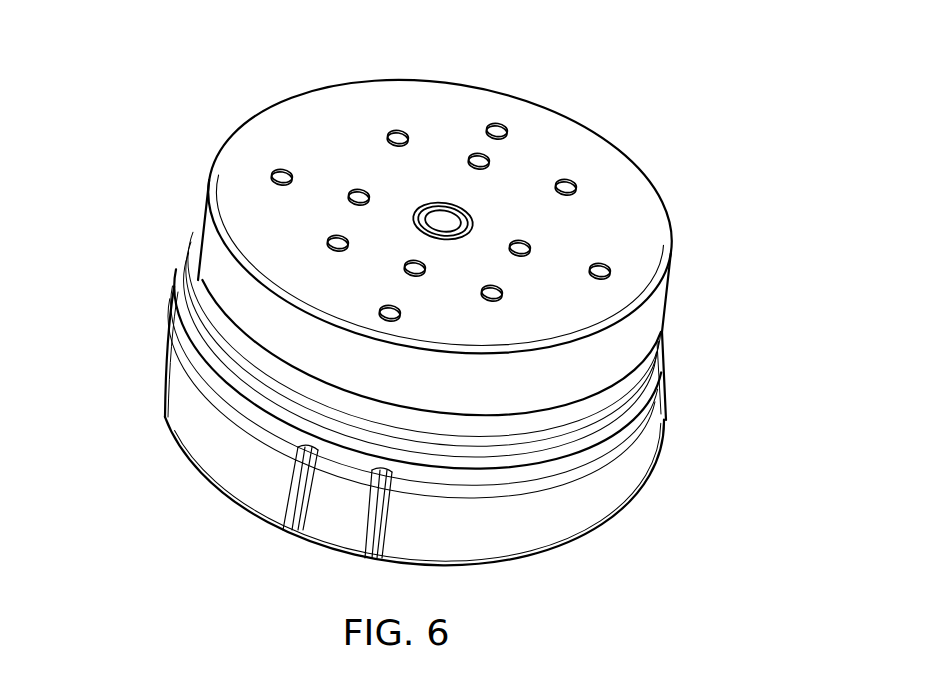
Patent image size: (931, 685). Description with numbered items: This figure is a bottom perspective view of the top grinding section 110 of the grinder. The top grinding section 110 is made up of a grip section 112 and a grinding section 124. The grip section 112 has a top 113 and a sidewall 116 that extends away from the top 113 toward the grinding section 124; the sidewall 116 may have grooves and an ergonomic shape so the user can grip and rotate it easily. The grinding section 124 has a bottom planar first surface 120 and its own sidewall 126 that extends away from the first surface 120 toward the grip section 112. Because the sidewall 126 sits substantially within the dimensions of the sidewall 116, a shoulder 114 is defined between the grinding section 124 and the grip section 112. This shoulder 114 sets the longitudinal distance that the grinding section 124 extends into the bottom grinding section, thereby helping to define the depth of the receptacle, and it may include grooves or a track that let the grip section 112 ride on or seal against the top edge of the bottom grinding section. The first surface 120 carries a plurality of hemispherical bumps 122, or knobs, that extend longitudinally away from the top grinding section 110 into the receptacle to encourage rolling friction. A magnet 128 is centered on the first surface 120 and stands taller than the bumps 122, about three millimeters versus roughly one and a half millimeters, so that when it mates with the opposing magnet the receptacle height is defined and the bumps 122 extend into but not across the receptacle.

The top grinding section 110 is at (687, 204).
The grip section 112 is at (668, 432).
The top 113 is at (163, 422).
The shoulder 114 is at (199, 300).
The sidewall 116 is at (324, 505).
The first surface 120 is at (539, 124).
The bumps 122 is at (574, 171).
The grinding section 124 is at (238, 105).
The sidewall 126 is at (204, 164).
The magnet 128 is at (443, 203).